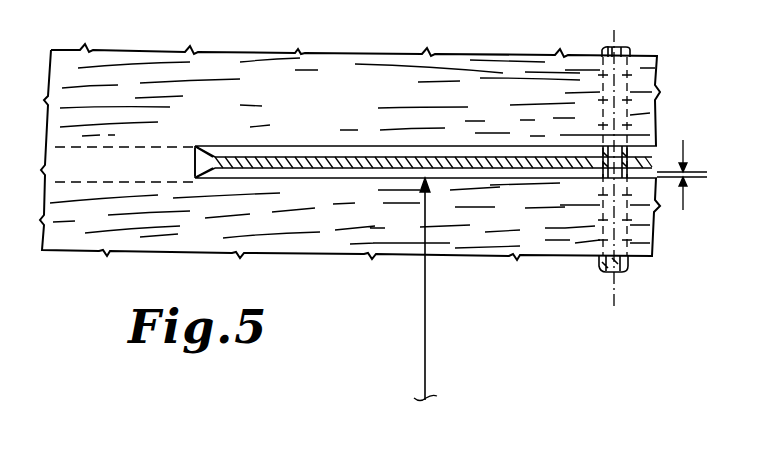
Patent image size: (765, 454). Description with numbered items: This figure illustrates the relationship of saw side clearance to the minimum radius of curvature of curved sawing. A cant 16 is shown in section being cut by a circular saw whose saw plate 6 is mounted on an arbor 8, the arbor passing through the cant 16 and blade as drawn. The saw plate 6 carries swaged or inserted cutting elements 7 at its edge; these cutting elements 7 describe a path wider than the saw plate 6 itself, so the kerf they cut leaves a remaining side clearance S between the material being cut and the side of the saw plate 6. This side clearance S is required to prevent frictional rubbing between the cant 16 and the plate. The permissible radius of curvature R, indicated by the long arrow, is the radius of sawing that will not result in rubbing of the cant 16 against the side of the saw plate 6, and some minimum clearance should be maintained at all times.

The cant 16 is at (364, 96).
The saw plate 6 is at (313, 160).
The cutting elements 7 is at (197, 161).
The arbor 8 is at (620, 52).
The side clearance S is at (691, 175).
The permissible radius of curvature R is at (434, 289).